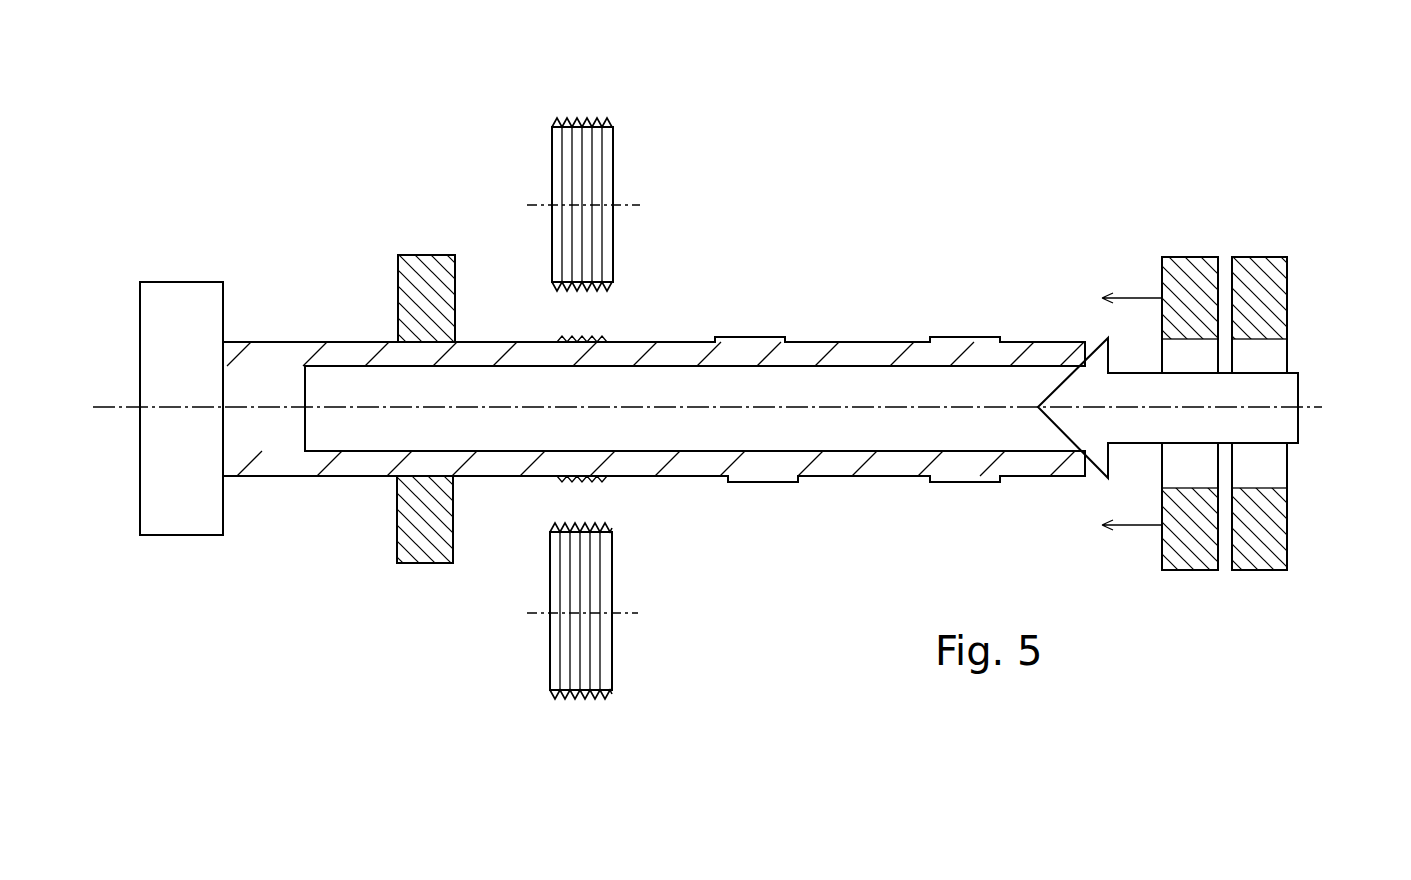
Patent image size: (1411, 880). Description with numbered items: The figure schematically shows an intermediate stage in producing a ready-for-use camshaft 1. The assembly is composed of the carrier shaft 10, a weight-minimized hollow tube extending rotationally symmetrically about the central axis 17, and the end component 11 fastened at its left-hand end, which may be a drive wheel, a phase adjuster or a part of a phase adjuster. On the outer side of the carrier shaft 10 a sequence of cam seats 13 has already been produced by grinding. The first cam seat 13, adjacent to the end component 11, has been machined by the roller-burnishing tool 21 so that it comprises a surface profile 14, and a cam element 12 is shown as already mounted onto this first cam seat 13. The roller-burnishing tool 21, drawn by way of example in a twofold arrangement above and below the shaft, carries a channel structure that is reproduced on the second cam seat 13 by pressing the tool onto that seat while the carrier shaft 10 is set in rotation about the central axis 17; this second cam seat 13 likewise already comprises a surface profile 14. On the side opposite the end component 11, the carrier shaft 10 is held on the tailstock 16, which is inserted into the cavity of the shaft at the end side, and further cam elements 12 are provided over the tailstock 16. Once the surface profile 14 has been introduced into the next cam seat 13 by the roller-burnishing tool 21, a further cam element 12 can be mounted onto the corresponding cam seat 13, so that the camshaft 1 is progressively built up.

The ready-for-use camshaft 1 is at (955, 148).
The carrier shaft 10 is at (823, 467).
The end component 11 is at (178, 280).
The cam element 12 is at (415, 253).
The cam seat 13 is at (455, 340).
The surface profile 14 is at (583, 338).
The tailstock 16 is at (1290, 425).
The central axis 17 is at (102, 407).
The roller-burnishing tool 21 is at (613, 160).